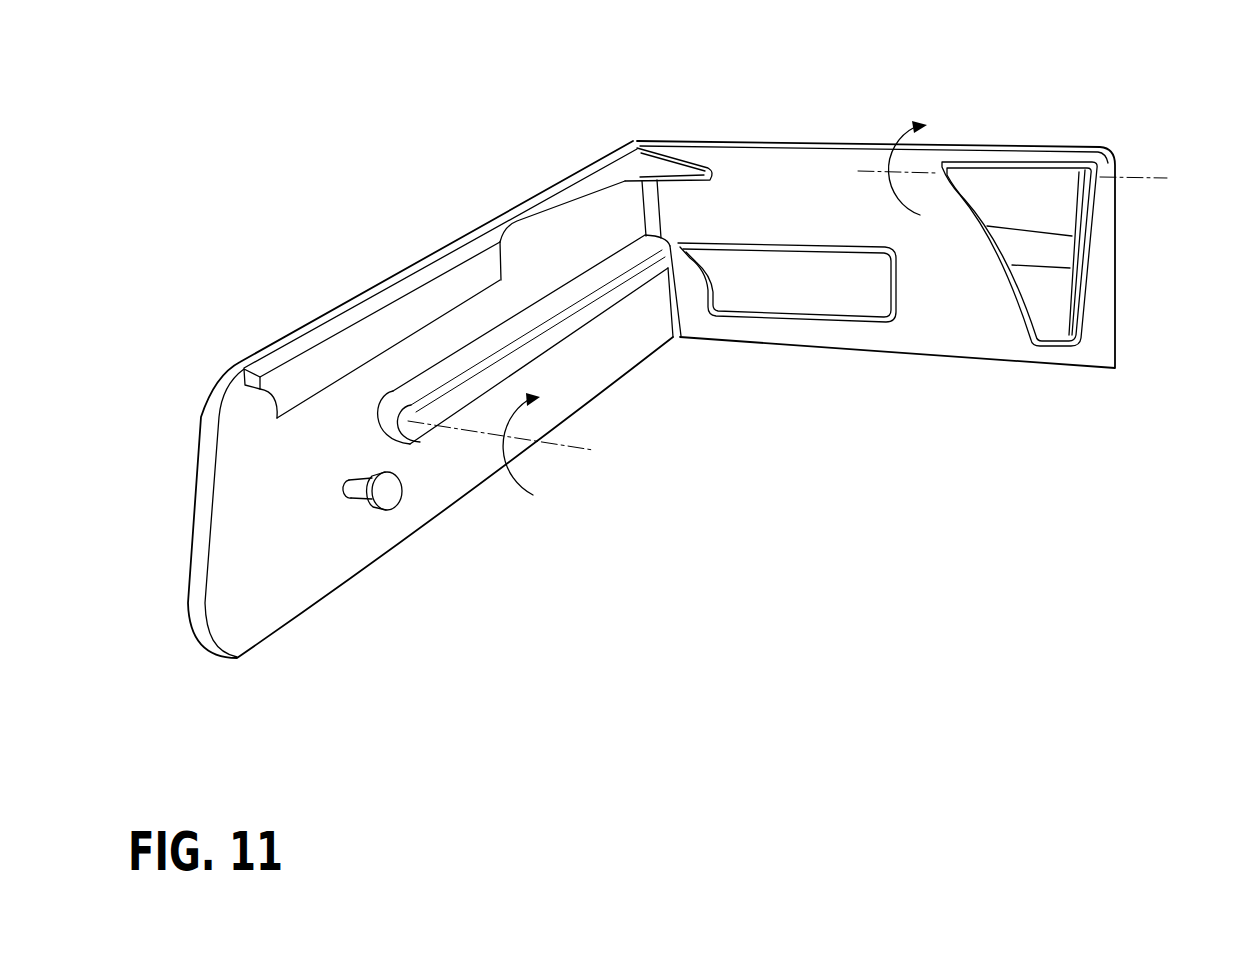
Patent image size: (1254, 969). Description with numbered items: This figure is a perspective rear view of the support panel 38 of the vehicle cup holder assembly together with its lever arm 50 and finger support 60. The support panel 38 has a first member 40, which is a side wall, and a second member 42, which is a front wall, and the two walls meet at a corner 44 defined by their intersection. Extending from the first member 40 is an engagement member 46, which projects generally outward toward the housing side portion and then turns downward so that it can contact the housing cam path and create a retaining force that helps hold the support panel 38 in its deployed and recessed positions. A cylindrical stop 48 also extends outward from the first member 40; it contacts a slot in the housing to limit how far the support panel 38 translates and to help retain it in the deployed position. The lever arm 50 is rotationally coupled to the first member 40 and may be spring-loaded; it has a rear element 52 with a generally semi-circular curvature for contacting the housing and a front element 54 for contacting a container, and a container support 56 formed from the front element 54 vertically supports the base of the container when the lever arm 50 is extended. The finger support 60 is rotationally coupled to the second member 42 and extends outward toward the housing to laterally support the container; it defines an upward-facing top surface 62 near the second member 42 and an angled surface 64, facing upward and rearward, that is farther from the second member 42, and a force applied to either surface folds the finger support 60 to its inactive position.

The support panel 38 is at (562, 235).
The first member 40 is at (463, 320).
The second member 42 is at (790, 141).
The corner 44 is at (650, 197).
The engagement member 46 is at (287, 353).
The cylindrical stop 48 is at (388, 500).
The lever arm 50 is at (567, 317).
The rear element 52 is at (423, 442).
The front element 54 is at (688, 262).
The container support 56 is at (883, 327).
The finger support 60 is at (1062, 170).
The top surface 62 is at (1072, 237).
The angled surface 64 is at (1072, 322).